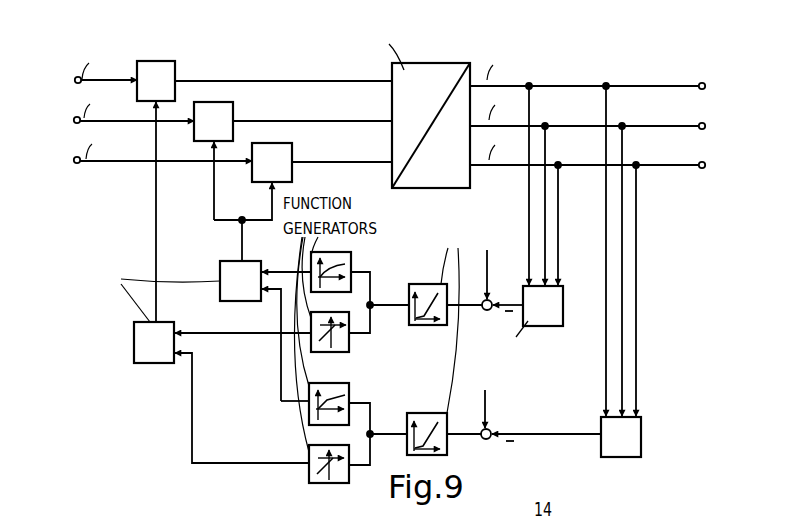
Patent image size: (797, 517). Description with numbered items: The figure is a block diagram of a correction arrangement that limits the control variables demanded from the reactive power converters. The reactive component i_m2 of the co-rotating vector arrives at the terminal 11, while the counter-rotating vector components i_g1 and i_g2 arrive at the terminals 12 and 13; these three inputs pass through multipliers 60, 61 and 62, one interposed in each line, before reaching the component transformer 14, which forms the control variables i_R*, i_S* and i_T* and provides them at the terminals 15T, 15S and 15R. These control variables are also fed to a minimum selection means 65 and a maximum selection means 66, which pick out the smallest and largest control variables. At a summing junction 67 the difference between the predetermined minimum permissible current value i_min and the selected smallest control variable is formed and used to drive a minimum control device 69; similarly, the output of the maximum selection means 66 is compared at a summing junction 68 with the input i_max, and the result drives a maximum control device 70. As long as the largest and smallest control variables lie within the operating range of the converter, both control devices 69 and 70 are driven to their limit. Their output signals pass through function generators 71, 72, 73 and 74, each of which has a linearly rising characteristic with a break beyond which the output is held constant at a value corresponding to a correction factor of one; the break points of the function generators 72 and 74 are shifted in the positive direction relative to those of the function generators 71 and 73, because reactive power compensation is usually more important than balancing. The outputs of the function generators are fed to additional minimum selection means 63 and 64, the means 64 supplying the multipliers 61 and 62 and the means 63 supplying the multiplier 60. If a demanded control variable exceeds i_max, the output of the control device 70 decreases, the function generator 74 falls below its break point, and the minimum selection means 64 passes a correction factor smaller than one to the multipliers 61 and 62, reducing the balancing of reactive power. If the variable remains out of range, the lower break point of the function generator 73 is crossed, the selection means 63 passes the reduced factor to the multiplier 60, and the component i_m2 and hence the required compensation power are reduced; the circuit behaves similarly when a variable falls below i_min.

The terminal 11 is at (75, 80).
The terminal 12 is at (74, 121).
The terminal 13 is at (74, 161).
The component transformer 14 is at (428, 66).
The terminal 15T is at (705, 86).
The terminal 15S is at (705, 126).
The terminal 15R is at (705, 165).
The multiplier 60 is at (159, 60).
The multiplier 61 is at (233, 115).
The multiplier 62 is at (292, 157).
The minimum selection means 63 is at (216, 373).
The minimum selection means 64 is at (164, 309).
The minimum selection means 65 is at (541, 232).
The maximum selection means 66 is at (585, 299).
The summing junction 67 is at (484, 310).
The summing junction 68 is at (484, 439).
The minimum control device 69 is at (423, 284).
The maximum control device 70 is at (423, 413).
The function generator 71 is at (350, 341).
The function generator 72 is at (362, 247).
The function generator 73 is at (340, 484).
The function generator 74 is at (350, 389).